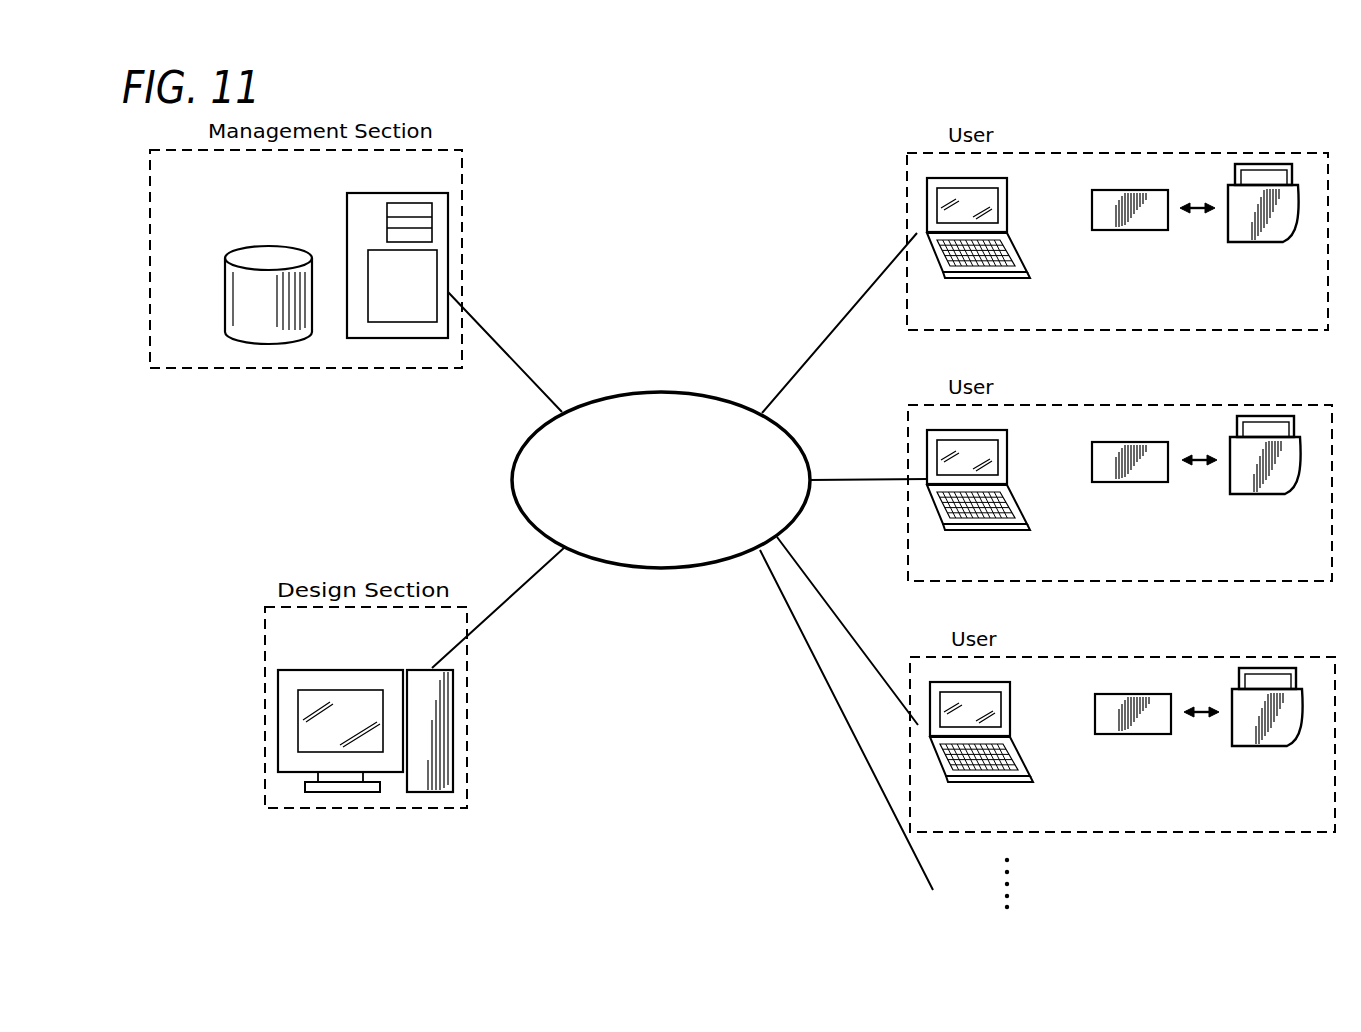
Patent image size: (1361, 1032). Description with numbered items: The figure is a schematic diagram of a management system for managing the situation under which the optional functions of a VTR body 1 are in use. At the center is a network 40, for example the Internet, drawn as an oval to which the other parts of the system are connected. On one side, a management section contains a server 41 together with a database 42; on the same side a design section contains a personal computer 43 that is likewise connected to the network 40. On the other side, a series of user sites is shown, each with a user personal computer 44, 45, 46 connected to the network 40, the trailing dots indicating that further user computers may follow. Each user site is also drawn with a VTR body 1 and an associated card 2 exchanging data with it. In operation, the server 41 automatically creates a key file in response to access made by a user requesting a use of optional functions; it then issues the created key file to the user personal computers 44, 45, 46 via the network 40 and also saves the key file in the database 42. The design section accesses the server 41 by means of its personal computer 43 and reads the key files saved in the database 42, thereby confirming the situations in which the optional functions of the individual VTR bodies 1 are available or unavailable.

The VTR body 1 is at (1237, 244).
The card (memory card) 2 is at (1120, 231).
The network 40 is at (644, 392).
The server 41 is at (353, 193).
The database 42 is at (235, 248).
The personal computer 43 is at (295, 670).
The user personal computer 44 is at (977, 278).
The user personal computer 45 is at (977, 530).
The user personal computer 46 is at (980, 782).